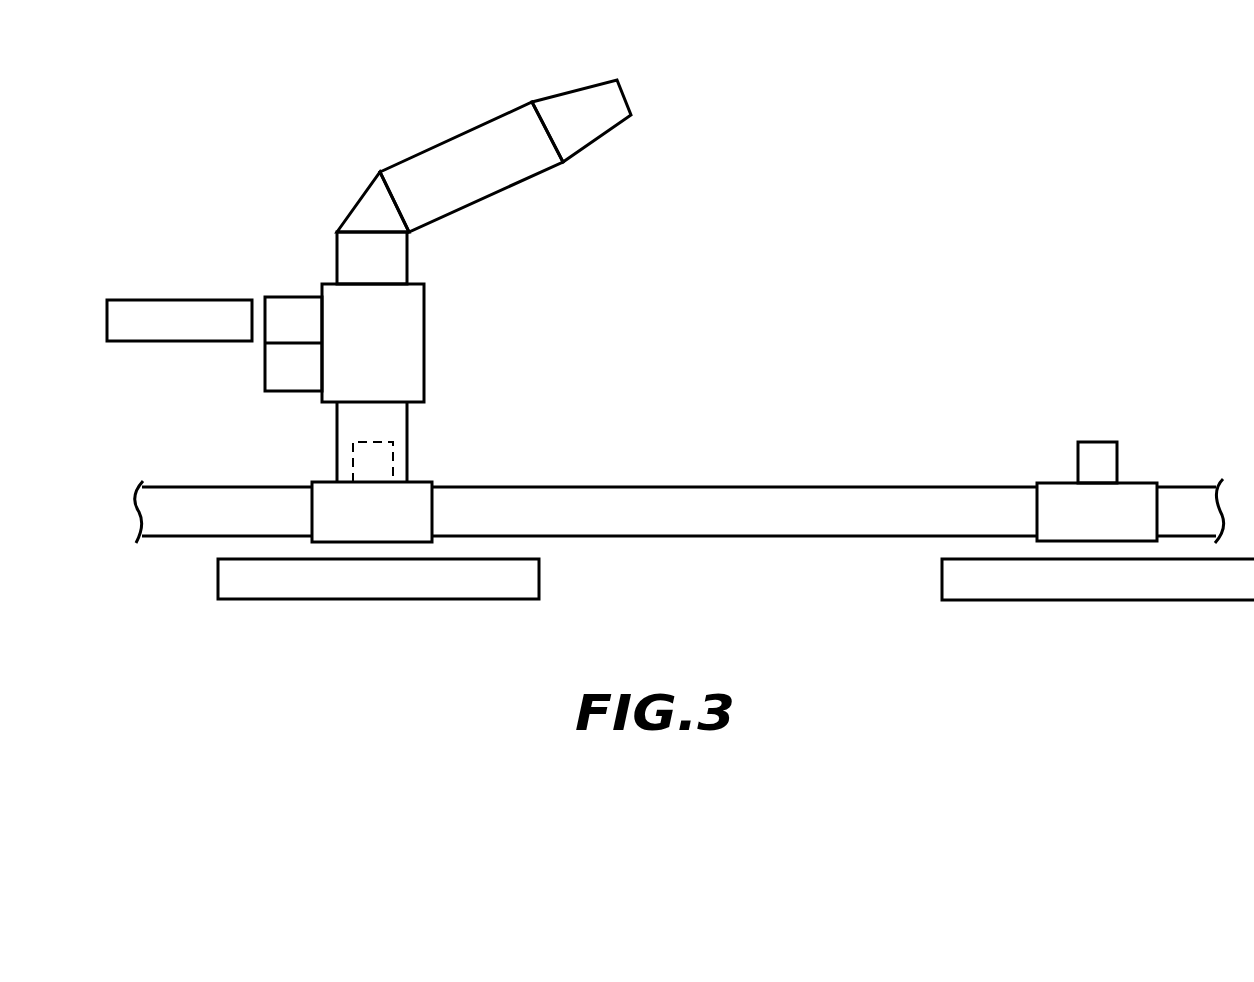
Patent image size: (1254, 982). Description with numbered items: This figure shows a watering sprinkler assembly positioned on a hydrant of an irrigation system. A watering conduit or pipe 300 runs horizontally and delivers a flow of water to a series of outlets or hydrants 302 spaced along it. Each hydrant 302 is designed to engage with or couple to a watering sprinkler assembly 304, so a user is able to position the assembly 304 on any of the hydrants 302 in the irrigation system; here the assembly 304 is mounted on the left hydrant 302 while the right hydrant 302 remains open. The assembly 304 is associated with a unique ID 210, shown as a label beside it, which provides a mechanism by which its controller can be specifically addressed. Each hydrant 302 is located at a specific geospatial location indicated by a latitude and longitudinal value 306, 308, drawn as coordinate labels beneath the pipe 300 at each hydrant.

The unique ID 210 is at (162, 300).
The watering conduit or pipe 300 is at (735, 487).
The hydrant 302 is at (407, 447).
The watering sprinkler assembly 304 is at (510, 88).
The latitude value 306 is at (275, 599).
The longitudinal value 308 is at (998, 600).